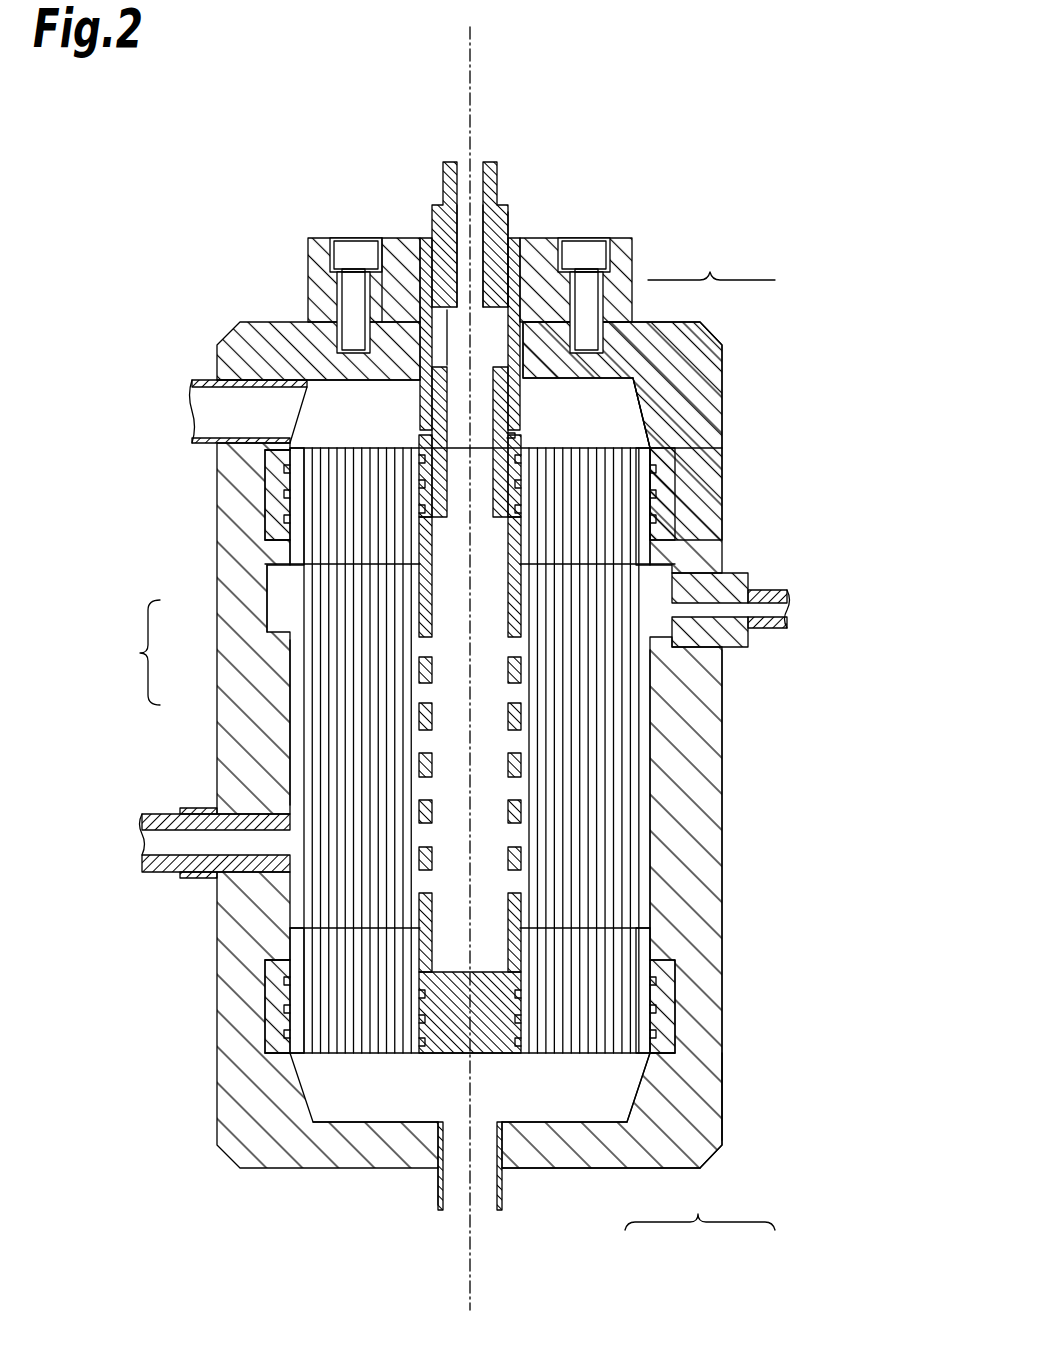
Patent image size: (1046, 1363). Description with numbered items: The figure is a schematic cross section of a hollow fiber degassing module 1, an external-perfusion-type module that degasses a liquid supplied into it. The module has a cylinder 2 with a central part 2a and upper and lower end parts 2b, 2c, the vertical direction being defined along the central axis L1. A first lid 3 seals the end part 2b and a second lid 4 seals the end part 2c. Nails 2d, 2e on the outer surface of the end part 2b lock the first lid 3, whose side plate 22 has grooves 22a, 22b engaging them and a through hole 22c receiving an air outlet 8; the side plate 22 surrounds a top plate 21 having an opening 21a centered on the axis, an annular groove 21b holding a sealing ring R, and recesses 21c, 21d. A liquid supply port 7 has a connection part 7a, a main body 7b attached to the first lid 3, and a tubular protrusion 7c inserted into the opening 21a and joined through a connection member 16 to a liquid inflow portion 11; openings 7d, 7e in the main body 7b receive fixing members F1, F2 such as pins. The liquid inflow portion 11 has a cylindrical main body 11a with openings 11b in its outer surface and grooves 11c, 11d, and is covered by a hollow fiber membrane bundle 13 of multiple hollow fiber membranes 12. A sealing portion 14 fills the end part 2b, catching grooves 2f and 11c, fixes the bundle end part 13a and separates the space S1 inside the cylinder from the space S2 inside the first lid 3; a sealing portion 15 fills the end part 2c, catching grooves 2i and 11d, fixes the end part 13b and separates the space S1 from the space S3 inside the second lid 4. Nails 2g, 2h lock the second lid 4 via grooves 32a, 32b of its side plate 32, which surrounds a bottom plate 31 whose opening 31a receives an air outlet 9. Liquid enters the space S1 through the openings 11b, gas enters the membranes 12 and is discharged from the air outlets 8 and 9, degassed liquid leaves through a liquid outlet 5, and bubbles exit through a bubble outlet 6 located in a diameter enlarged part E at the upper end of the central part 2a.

The hollow fiber degassing module 1 is at (825, 147).
The cylinder 2 is at (778, 775).
The central part 2a is at (705, 712).
The end part 2b is at (665, 459).
The end part 2c is at (660, 1040).
The nail 2d is at (283, 487).
The nail 2e is at (660, 497).
The groove 2f is at (283, 472).
The nail 2g is at (283, 978).
The nail 2h is at (670, 977).
The groove 2i is at (285, 964).
The first lid 3 is at (711, 263).
The second lid 4 is at (700, 1238).
The liquid outlet 5 is at (183, 812).
The bubble outlet 6 is at (760, 590).
The liquid supply port 7 is at (645, 137).
The connection part 7a is at (500, 215).
The main body 7b is at (620, 243).
The protrusion 7c is at (508, 347).
The opening 7d is at (343, 273).
The opening 7e is at (588, 312).
The air outlet 8 is at (197, 380).
The air outlet 9 is at (502, 1205).
The liquid inflow portion 11 is at (134, 652).
The cylindrical main body 11a is at (425, 617).
The openings 11b is at (425, 691).
The groove 11c is at (433, 490).
The groove 11d is at (529, 1005).
The hollow fiber membranes 12 is at (615, 927).
The hollow fiber membrane bundle 13 is at (642, 830).
The end part 13a is at (595, 445).
The end part 13b is at (603, 1054).
The sealing portion 14 is at (655, 432).
The sealing portion 15 is at (675, 1070).
The connection member 16 is at (515, 437).
The top plate 21 is at (667, 340).
The opening 21a is at (396, 312).
The annular groove 21b is at (393, 320).
The recess 21c is at (340, 325).
The recess 21d is at (627, 288).
The side plate 22 is at (722, 380).
The groove 22a is at (275, 504).
The groove 22b is at (668, 520).
The through hole 22c is at (252, 380).
The bottom plate 31 is at (665, 1165).
The opening 31a is at (440, 1175).
The side plate 32 is at (735, 1135).
The groove 32a is at (275, 998).
The groove 32b is at (670, 1000).
The diameter enlarged part E is at (275, 592).
The fixing member F1 is at (355, 255).
The fixing member F2 is at (568, 253).
The central axis L1 is at (470, 57).
The sealing ring R is at (497, 361).
The space S1 is at (295, 736).
The space S2 is at (316, 415).
The space S3 is at (470, 1102).